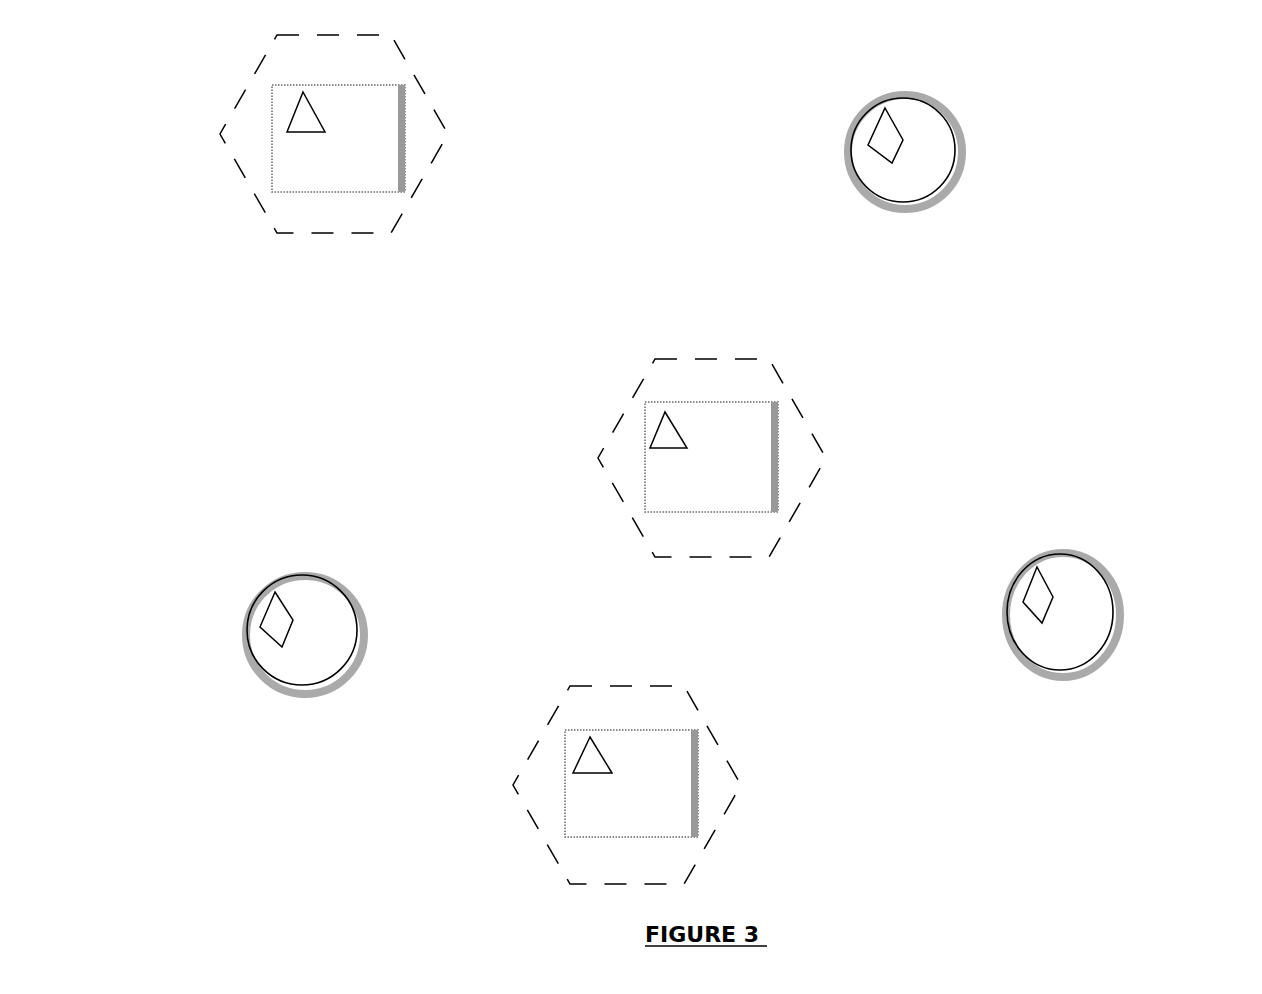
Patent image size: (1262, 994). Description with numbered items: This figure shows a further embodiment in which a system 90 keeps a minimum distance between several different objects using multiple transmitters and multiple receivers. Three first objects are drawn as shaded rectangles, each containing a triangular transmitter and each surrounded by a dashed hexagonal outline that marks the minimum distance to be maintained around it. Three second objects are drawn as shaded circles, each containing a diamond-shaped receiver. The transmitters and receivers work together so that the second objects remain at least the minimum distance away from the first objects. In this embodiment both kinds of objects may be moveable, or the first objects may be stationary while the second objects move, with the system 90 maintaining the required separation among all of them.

The system 90 is at (1103, 117).